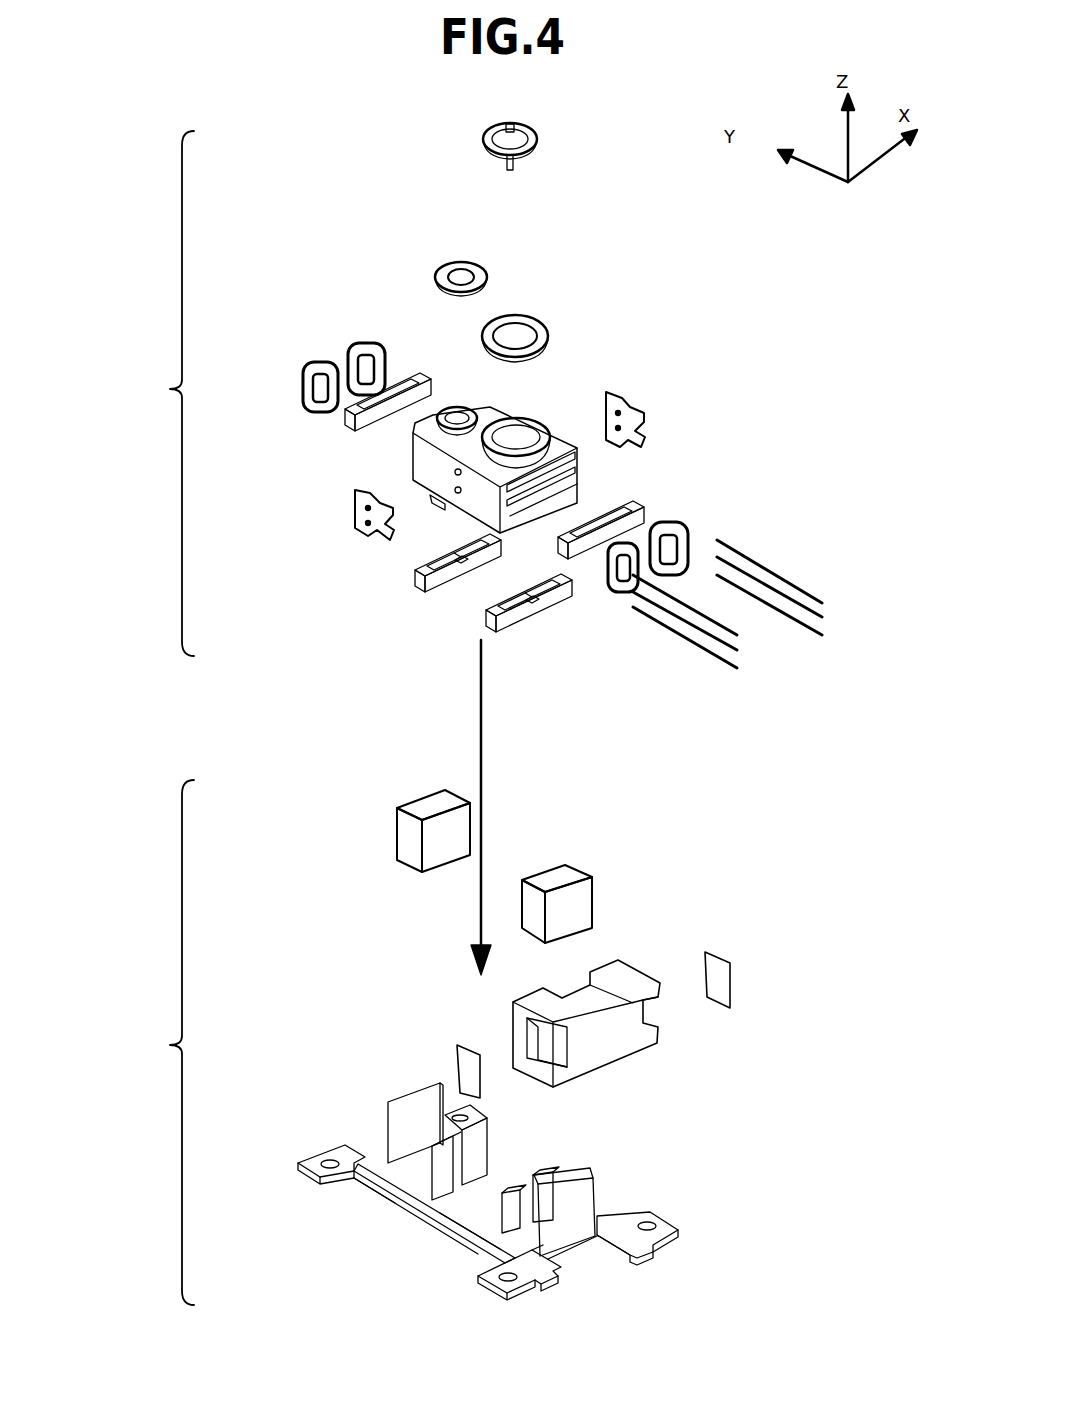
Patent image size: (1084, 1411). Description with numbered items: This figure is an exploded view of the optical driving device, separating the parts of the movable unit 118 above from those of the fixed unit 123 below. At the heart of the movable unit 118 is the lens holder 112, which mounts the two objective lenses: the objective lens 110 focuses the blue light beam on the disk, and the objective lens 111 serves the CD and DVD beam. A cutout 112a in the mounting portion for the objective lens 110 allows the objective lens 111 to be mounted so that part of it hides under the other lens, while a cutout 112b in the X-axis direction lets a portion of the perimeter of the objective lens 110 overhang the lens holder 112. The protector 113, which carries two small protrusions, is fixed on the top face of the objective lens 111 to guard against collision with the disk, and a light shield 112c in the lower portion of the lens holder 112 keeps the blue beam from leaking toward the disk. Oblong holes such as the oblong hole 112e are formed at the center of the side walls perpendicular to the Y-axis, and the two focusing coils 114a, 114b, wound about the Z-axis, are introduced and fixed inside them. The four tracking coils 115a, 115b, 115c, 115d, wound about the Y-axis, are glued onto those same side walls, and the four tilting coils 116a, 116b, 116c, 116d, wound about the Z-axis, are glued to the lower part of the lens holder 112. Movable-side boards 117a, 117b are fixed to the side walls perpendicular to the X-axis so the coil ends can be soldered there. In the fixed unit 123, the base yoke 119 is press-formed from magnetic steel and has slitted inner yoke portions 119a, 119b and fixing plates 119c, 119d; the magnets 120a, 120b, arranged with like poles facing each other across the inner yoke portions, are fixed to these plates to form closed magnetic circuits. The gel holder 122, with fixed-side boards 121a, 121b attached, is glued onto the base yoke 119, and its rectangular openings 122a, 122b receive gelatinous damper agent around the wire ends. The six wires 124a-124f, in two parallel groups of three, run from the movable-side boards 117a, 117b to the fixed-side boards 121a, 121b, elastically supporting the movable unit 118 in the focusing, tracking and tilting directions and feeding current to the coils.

The objective lens 110 is at (423, 255).
The objective lens 111 is at (533, 307).
The lens holder 112 is at (412, 462).
The cutout 112a is at (540, 385).
The cutout 112b is at (450, 405).
The light shield 112c is at (440, 500).
The oblong hole 112e is at (563, 484).
The protector 113 is at (480, 150).
The focusing coil 114a is at (342, 422).
The focusing coil 114b is at (647, 513).
The tracking coil 115a is at (305, 360).
The tracking coil 115b is at (377, 347).
The tracking coil 115c is at (608, 580).
The tracking coil 115d is at (690, 523).
The tilting coil 116a is at (410, 568).
The tilting coil 116b is at (478, 561).
The tilting coil 116c is at (512, 627).
The tilting coil 116d is at (557, 607).
The movable-side board 117a is at (357, 505).
The movable-side board 117b is at (615, 385).
The movable unit 118 is at (128, 411).
The base yoke 119 is at (347, 1142).
The inner yoke portion 119a is at (393, 1207).
The inner yoke portion 119b is at (500, 1240).
The fixing plate 119c is at (405, 1095).
The fixing plate 119d is at (587, 1175).
The magnet 120a is at (405, 842).
The magnet 120b is at (560, 882).
The fixed-side board 121a is at (457, 1063).
The fixed-side board 121b is at (735, 968).
The gel holder 122 is at (613, 1035).
The rectangular opening 122a is at (543, 1040).
The rectangular opening 122b is at (643, 1007).
The fixed unit 123 is at (128, 1058).
The wires 124a-124f is at (833, 622).